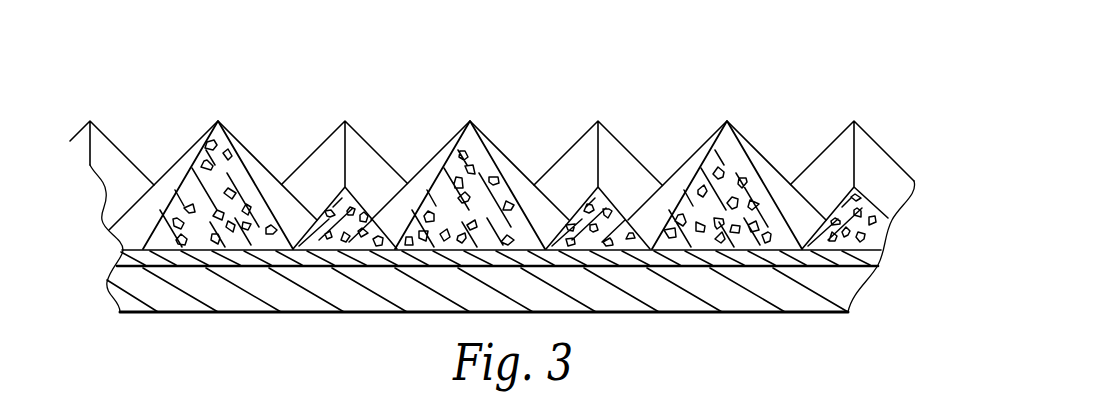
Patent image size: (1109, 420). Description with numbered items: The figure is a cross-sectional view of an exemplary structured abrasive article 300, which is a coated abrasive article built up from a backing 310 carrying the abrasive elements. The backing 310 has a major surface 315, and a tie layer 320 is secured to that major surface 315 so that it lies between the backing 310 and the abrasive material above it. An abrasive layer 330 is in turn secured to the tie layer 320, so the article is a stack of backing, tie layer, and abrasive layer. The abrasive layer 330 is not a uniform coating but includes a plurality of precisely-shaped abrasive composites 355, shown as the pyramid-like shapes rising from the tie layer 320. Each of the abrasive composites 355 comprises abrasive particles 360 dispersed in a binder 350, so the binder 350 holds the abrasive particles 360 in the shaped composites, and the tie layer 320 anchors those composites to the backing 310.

The structured abrasive article 300 is at (733, 86).
The backing 310 is at (852, 302).
The major surface 315 is at (868, 280).
The tie layer 320 is at (885, 256).
The abrasive layer 330 is at (916, 165).
The binder 350 is at (458, 153).
The precisely-shaped abrasive composites 355 is at (513, 162).
The abrasive particles 360 is at (764, 210).